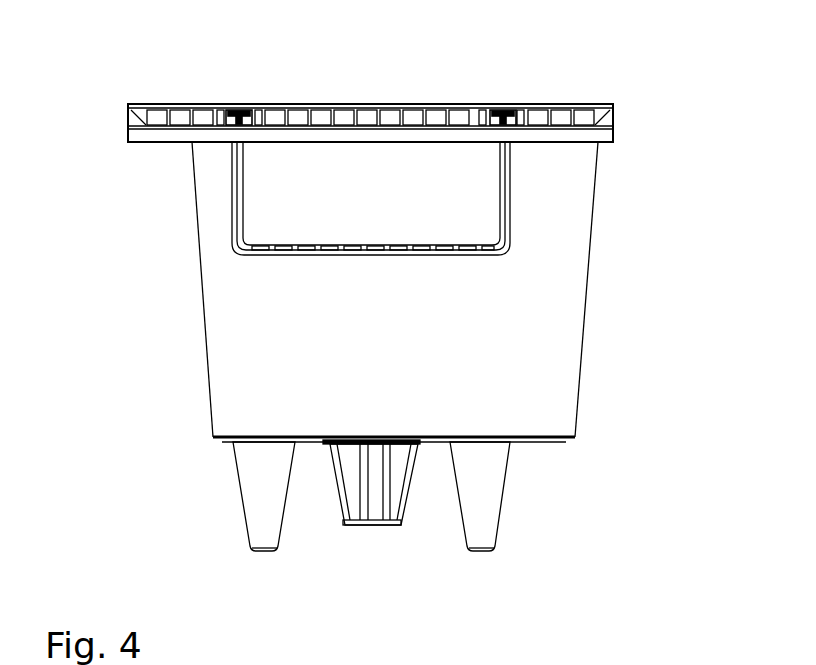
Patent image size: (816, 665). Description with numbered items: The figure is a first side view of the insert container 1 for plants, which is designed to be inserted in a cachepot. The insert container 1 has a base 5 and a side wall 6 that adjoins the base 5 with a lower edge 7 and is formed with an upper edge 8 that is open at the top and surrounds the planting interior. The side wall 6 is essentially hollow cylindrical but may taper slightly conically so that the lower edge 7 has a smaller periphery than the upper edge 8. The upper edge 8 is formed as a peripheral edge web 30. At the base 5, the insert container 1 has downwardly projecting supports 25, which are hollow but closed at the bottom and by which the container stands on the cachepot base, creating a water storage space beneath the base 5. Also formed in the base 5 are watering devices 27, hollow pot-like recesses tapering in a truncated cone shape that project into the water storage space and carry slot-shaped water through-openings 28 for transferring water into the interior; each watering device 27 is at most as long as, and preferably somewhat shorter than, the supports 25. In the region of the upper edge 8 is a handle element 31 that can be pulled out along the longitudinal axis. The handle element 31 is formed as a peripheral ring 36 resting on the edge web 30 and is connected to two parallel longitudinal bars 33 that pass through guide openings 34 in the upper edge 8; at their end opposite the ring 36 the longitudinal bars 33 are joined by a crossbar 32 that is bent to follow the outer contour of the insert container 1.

The insert container 1 is at (377, 76).
The base 5 is at (549, 442).
The side wall 6 is at (570, 285).
The lower edge 7 is at (580, 443).
The upper edge 8 is at (586, 143).
The supports 25 is at (264, 544).
The watering devices 27 is at (408, 516).
The water through-openings 28 is at (388, 515).
The edge web 30 is at (545, 136).
The handle element 31 is at (439, 98).
The crossbar 32 is at (290, 254).
The longitudinal bars 33 is at (240, 195).
The guide openings 34 is at (520, 153).
The ring 36 is at (302, 106).